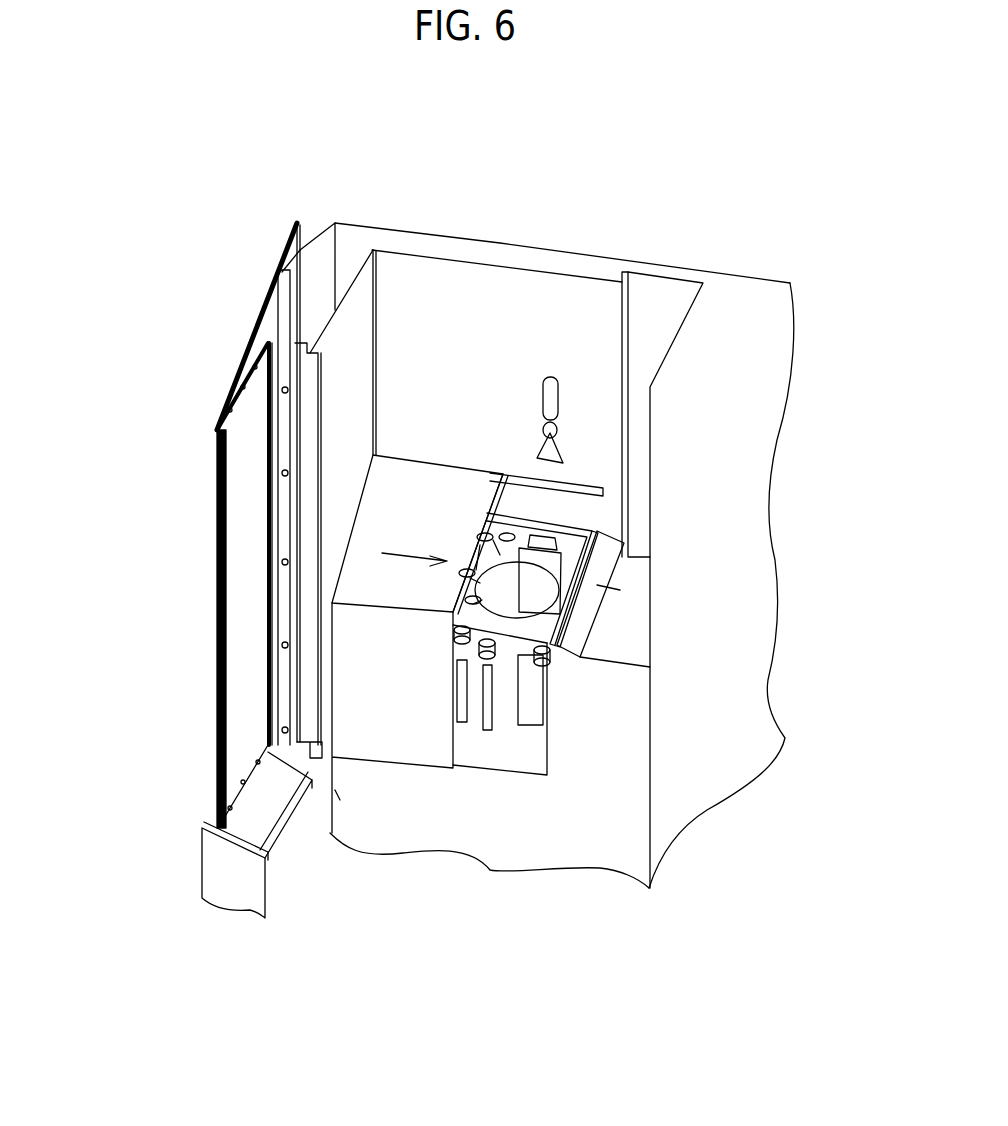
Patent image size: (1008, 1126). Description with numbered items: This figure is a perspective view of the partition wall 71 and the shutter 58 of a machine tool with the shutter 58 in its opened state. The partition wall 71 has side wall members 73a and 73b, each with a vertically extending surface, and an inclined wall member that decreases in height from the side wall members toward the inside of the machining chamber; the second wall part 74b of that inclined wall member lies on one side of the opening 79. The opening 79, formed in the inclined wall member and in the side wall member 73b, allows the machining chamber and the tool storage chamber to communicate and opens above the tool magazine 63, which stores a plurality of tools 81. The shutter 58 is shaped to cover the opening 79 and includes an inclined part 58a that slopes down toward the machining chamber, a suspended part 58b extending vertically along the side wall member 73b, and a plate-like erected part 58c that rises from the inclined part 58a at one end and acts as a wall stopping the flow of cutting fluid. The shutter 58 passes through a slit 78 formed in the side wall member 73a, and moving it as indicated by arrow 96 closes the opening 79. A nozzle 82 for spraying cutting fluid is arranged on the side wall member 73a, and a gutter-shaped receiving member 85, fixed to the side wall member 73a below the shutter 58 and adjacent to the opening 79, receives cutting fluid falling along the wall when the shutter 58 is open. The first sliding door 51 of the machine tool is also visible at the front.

The partition wall 71 is at (588, 310).
The side wall member 73a is at (353, 337).
The side wall member 73b is at (357, 813).
The opening 79 is at (547, 750).
The slit 78 is at (577, 487).
The nozzle 82 is at (557, 458).
The second wall part 74b is at (573, 623).
The shutter 58 is at (112, 517).
The inclined part 58a is at (360, 582).
The suspended part 58b is at (373, 682).
The erected part 58c is at (465, 549).
The arrow 96 is at (410, 562).
The receiving member 85 is at (567, 518).
The tool magazine 63 is at (505, 662).
The tool 81 is at (477, 723).
The first sliding door 51 is at (217, 482).